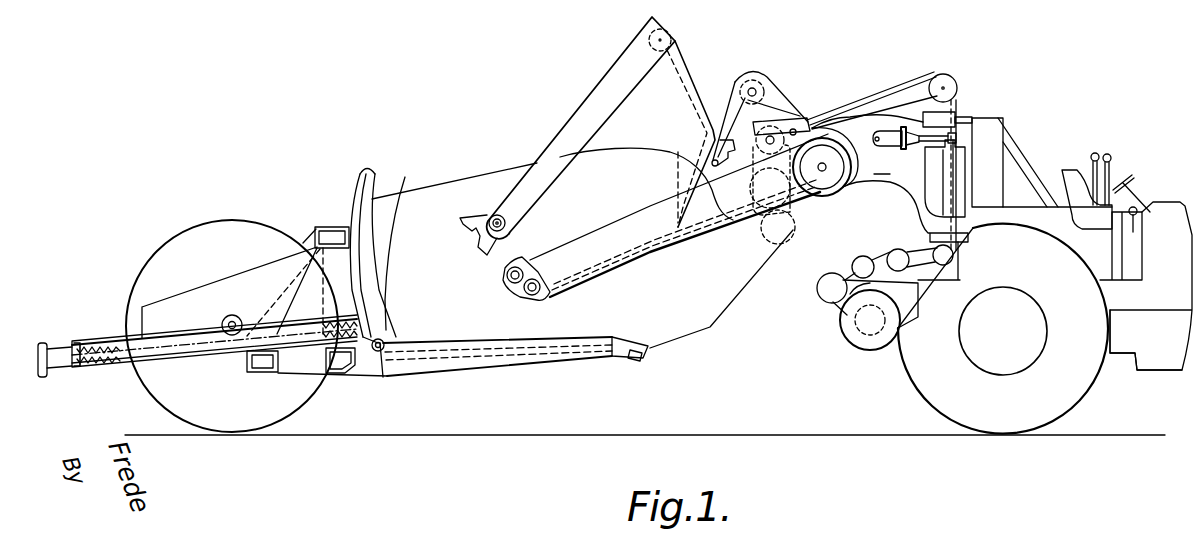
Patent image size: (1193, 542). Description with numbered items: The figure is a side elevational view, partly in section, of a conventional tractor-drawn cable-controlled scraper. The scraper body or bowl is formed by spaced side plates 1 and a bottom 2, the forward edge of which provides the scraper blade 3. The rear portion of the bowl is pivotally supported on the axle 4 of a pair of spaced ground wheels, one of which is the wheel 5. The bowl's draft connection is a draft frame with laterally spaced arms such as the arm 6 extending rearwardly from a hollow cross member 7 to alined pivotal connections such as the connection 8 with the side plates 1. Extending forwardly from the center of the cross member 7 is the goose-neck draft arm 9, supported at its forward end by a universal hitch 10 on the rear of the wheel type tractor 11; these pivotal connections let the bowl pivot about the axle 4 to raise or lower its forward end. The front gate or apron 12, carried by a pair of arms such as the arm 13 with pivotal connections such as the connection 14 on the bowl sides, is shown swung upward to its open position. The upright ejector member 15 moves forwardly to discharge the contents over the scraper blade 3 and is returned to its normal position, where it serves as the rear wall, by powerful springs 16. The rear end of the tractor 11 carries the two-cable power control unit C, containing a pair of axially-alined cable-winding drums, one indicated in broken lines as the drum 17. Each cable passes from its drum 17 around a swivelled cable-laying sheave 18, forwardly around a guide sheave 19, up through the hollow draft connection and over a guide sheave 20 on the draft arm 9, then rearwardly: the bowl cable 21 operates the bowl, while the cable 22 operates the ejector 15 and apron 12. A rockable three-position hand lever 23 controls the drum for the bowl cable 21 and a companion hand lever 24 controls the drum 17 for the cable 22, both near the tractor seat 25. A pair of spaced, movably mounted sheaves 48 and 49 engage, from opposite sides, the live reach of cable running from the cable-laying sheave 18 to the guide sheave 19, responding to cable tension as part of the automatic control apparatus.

The side plates 1 is at (415, 197).
The bottom 2 is at (444, 369).
The scraper blade 3 is at (645, 356).
The axle 4 is at (232, 315).
The ground wheel 5 is at (256, 413).
The draft frame arm 6 is at (655, 220).
The hollow cross member 7 is at (828, 190).
The pivotal connection 8 is at (505, 280).
The goose-neck draft arm 9 is at (882, 166).
The universal hitch 10 is at (942, 171).
The tractor 11 is at (1113, 353).
The apron 12 is at (683, 97).
The apron arm 13 is at (571, 118).
The pivotal connection 14 is at (505, 224).
The ejector member 15 is at (380, 258).
The springs 16 is at (114, 362).
The cable-winding drum 17 is at (875, 336).
The cable-laying sheave 18 is at (824, 297).
The guide sheave 19 is at (934, 251).
The guide sheave 20 is at (951, 78).
The bowl cable 21 is at (843, 108).
The ejector-and-apron cable 22 is at (898, 99).
The hand lever 23 is at (1111, 160).
The hand lever 24 is at (1091, 157).
The tractor seat 25 is at (1088, 224).
The movably-mounted sheave 48 is at (895, 250).
The movably-mounted sheave 49 is at (860, 258).
The two-cable power control unit C is at (850, 343).